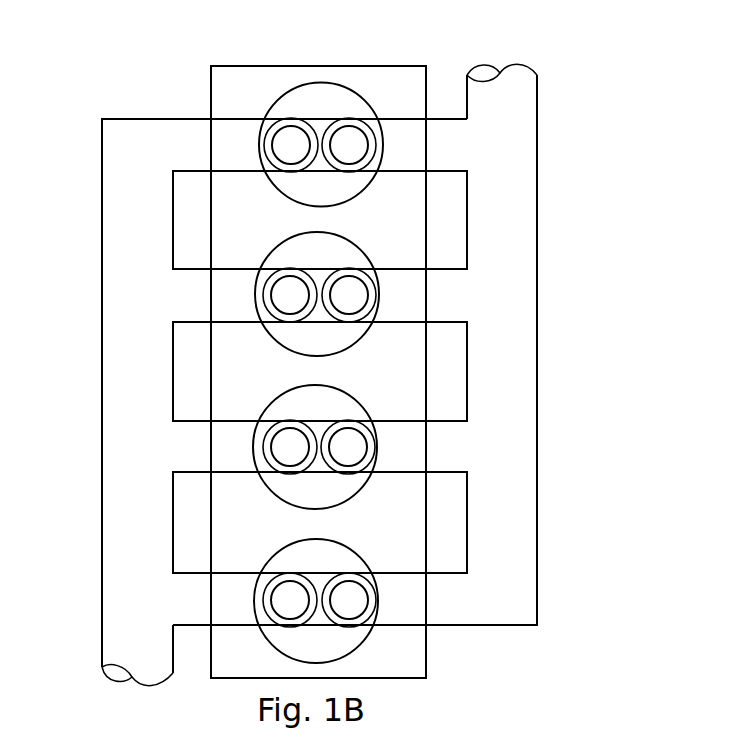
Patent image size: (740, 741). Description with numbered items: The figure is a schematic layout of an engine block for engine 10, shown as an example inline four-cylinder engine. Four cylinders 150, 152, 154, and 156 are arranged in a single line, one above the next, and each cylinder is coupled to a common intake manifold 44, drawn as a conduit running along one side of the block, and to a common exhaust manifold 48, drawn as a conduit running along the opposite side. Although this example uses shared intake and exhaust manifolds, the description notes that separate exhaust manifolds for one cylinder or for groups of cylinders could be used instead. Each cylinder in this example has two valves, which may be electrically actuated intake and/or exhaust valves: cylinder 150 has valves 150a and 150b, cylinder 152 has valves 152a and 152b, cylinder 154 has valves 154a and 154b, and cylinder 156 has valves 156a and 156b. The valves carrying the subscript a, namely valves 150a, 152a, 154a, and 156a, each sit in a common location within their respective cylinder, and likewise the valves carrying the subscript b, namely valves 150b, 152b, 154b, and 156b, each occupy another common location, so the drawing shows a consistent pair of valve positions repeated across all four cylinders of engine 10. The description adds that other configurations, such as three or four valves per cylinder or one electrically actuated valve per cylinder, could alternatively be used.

The engine 10 is at (118, 80).
The common intake manifold 44 is at (151, 397).
The common exhaust manifold 48 is at (511, 402).
The cylinder 150 is at (318, 540).
The valve 150a is at (298, 575).
The valve 150b is at (348, 574).
The cylinder 152 is at (303, 508).
The valve 152a is at (291, 473).
The valve 152b is at (348, 473).
The cylinder 154 is at (337, 233).
The valve 154a is at (297, 270).
The valve 154b is at (348, 270).
The cylinder 156 is at (351, 97).
The valve 156a is at (300, 121).
The valve 156b is at (349, 120).